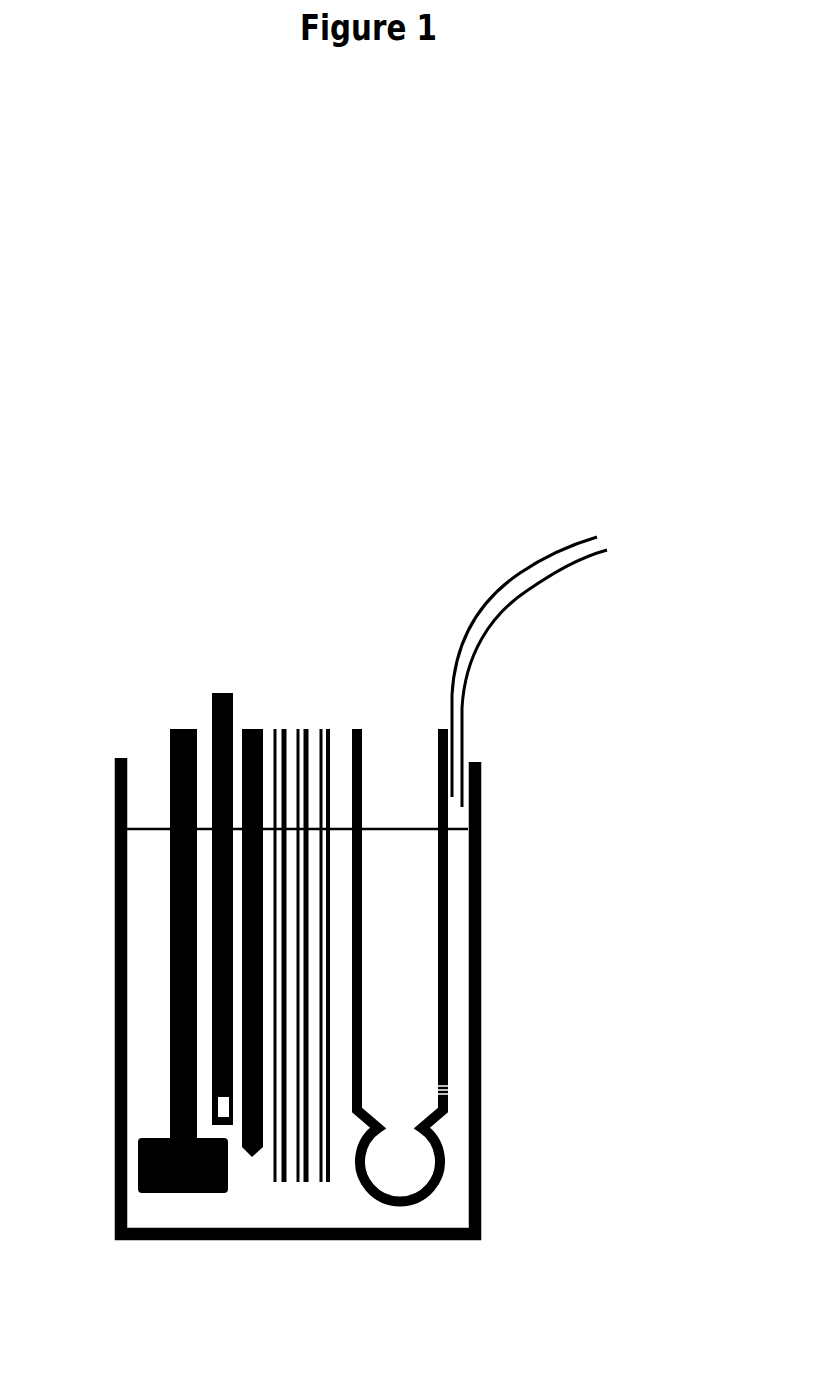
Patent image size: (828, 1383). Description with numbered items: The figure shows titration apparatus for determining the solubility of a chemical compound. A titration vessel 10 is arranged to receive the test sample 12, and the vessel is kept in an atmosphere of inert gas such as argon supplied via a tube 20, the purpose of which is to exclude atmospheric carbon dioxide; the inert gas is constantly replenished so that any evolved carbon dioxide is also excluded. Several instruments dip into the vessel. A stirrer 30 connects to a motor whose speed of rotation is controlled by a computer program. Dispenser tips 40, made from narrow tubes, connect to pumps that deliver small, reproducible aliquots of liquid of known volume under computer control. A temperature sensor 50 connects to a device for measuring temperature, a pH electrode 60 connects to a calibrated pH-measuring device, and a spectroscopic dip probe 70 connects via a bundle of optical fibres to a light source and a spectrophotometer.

The titration vessel 10 is at (517, 1123).
The test sample 12 is at (144, 851).
The tube 20 is at (529, 660).
The stirrer 30 is at (185, 681).
The dispenser tips 40 is at (300, 678).
The temperature sensor 50 is at (253, 678).
The pH electrode 60 is at (417, 682).
The spectroscopic dip probe 70 is at (209, 651).